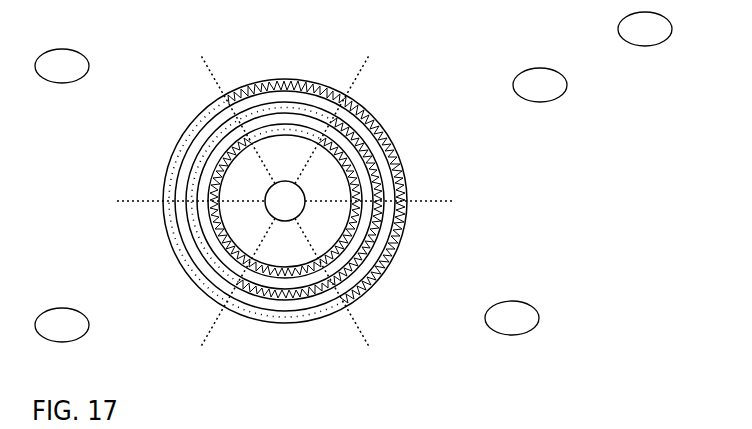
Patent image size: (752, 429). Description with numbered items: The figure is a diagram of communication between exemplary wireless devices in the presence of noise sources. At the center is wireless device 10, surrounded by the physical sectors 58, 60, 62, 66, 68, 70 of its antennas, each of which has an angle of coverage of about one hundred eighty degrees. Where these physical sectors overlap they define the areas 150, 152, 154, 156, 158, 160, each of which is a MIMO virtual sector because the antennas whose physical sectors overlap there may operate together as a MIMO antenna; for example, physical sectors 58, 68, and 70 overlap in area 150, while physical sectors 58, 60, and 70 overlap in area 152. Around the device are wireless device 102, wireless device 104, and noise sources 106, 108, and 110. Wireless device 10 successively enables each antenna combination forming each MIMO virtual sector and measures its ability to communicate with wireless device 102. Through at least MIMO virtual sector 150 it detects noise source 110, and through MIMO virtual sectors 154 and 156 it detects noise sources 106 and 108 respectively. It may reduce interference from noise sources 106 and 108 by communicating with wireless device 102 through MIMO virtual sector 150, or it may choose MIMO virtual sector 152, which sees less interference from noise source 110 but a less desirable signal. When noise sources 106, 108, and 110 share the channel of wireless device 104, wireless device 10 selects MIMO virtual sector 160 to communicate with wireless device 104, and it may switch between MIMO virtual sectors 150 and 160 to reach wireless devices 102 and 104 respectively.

The wireless device 10 is at (273, 210).
The physical sector 58 is at (208, 192).
The physical sector 60 is at (192, 167).
The physical sector 62 is at (222, 102).
The physical sector 66 is at (358, 223).
The physical sector 68 is at (386, 182).
The physical sector 70 is at (345, 103).
The wireless device 102 is at (523, 94).
The wireless device 104 is at (495, 328).
The noise source 106 is at (45, 76).
The noise source 108 is at (45, 334).
The noise source 110 is at (628, 38).
The MIMO virtual sector 150 is at (442, 120).
The MIMO virtual sector 152 is at (267, 70).
The MIMO virtual sector 154 is at (112, 125).
The MIMO virtual sector 156 is at (124, 275).
The MIMO virtual sector 158 is at (302, 363).
The MIMO virtual sector 160 is at (414, 298).